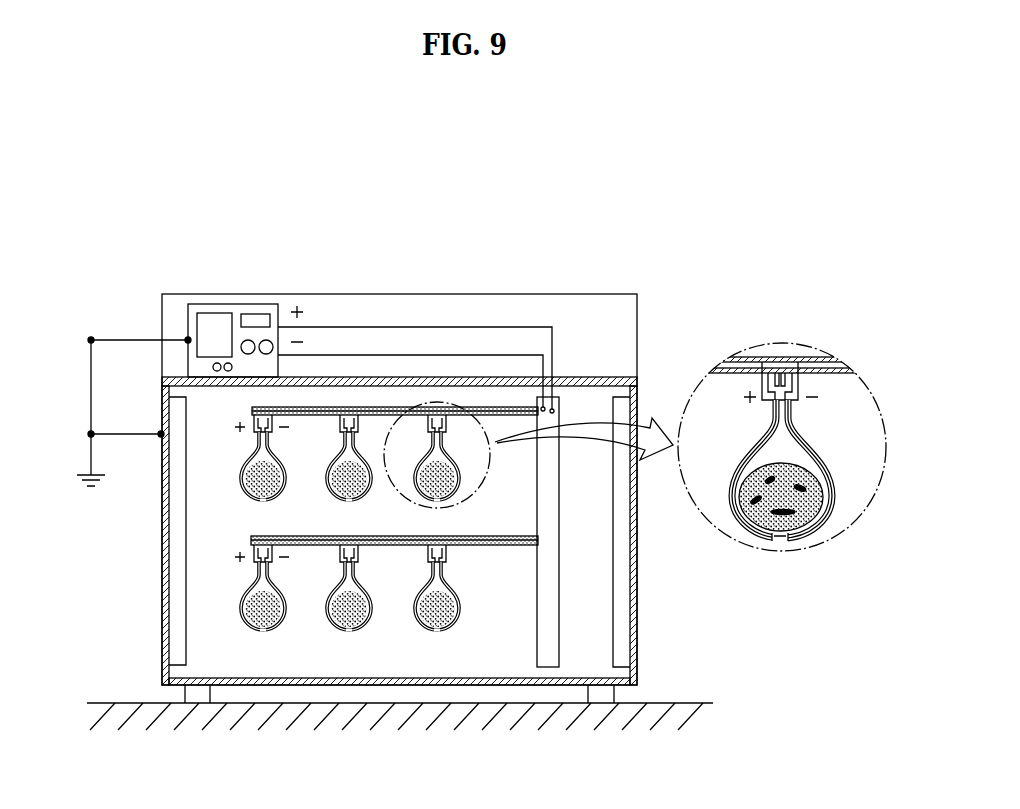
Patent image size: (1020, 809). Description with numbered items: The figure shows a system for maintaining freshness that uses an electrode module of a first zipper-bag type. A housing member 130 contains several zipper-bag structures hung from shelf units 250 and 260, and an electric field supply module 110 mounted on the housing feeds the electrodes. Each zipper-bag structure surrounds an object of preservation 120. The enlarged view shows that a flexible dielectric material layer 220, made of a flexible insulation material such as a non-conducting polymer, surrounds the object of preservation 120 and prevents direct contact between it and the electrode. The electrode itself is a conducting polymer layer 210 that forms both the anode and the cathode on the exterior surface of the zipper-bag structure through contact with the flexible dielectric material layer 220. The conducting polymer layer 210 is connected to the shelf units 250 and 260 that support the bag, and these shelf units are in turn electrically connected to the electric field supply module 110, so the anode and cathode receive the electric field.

The electric field supply module 110 is at (228, 304).
The housing member 130 is at (637, 611).
The shelf unit 250 is at (797, 357).
The shelf unit 260 is at (745, 357).
The conducting polymer layer 210 is at (810, 445).
The object of preservation 120 is at (826, 525).
The flexible dielectric material layer 220 is at (780, 542).